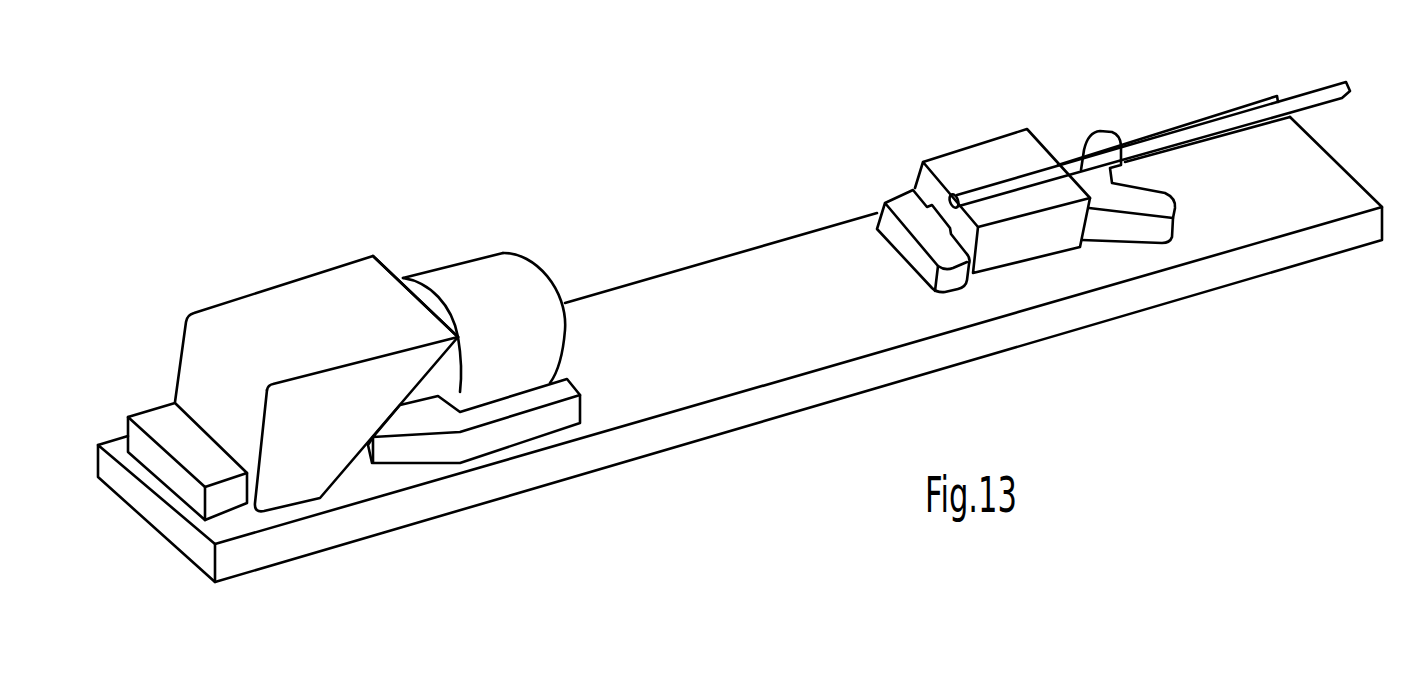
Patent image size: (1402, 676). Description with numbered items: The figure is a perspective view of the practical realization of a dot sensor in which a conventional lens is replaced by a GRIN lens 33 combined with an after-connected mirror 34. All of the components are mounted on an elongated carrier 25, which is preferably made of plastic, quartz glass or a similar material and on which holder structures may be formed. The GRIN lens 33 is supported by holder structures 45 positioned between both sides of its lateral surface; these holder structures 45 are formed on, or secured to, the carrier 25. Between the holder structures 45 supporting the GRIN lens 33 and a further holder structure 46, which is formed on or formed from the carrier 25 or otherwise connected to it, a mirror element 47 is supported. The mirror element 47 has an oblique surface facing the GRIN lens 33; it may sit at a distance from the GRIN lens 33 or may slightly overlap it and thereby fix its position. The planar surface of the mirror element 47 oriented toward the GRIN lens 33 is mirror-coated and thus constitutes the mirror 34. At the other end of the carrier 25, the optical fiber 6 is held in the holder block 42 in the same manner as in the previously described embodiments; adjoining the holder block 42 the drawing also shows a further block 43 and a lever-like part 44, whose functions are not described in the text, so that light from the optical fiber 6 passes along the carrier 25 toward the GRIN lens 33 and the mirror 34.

The optical fiber 6 is at (1290, 109).
The carrier 25 is at (671, 291).
The GRIN lens 33 is at (526, 271).
The mirror 34 is at (401, 264).
The holder block 42 is at (994, 181).
The clamping block 43 is at (901, 245).
The lever 44 is at (1154, 203).
The holder structures 45 is at (562, 394).
The holder structure 46 is at (160, 420).
The mirror element 47 is at (313, 288).